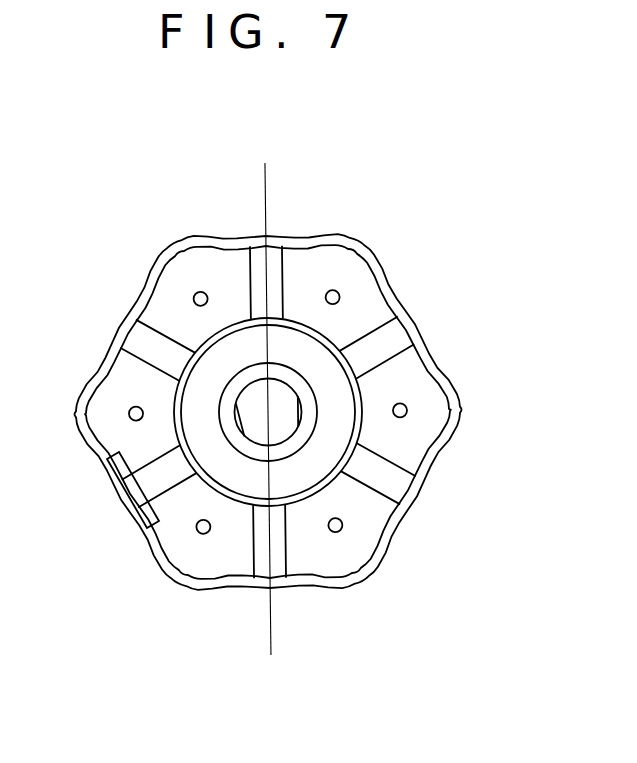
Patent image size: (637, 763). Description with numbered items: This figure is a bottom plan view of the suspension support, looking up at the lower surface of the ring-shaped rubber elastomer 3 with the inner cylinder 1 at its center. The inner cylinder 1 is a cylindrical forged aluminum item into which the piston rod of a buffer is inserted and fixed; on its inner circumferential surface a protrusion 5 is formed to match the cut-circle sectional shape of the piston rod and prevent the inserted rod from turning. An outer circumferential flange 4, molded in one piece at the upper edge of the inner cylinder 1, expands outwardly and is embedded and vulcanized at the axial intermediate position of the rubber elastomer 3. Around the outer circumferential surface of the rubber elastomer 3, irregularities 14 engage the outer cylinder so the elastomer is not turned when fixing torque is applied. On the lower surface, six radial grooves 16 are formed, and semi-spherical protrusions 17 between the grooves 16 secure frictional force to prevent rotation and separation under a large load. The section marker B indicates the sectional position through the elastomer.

The inner cylinder 1 is at (248, 377).
The rubber elastomer 3 is at (200, 222).
The outer circumferential flange 4 is at (230, 470).
The protrusion 5 is at (298, 403).
The irregularities 14 is at (360, 588).
The radial grooves 16 is at (270, 278).
The semi-spherical protrusions 17 is at (337, 291).
The section line B- B is at (105, 467).